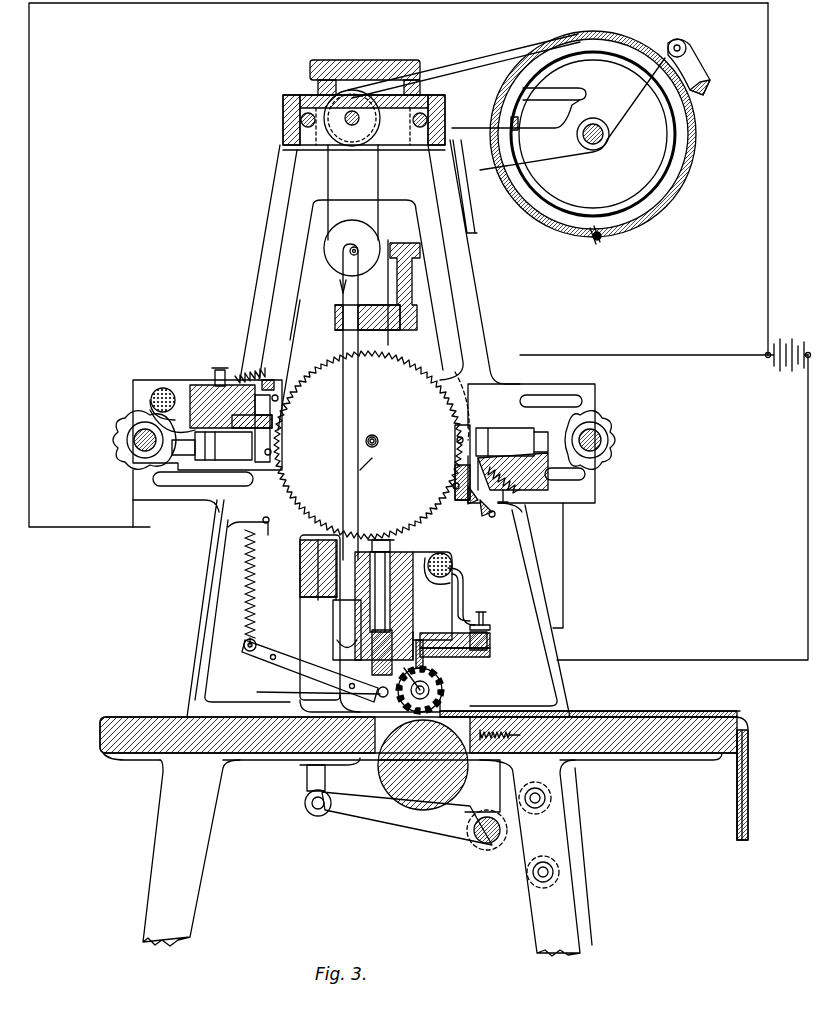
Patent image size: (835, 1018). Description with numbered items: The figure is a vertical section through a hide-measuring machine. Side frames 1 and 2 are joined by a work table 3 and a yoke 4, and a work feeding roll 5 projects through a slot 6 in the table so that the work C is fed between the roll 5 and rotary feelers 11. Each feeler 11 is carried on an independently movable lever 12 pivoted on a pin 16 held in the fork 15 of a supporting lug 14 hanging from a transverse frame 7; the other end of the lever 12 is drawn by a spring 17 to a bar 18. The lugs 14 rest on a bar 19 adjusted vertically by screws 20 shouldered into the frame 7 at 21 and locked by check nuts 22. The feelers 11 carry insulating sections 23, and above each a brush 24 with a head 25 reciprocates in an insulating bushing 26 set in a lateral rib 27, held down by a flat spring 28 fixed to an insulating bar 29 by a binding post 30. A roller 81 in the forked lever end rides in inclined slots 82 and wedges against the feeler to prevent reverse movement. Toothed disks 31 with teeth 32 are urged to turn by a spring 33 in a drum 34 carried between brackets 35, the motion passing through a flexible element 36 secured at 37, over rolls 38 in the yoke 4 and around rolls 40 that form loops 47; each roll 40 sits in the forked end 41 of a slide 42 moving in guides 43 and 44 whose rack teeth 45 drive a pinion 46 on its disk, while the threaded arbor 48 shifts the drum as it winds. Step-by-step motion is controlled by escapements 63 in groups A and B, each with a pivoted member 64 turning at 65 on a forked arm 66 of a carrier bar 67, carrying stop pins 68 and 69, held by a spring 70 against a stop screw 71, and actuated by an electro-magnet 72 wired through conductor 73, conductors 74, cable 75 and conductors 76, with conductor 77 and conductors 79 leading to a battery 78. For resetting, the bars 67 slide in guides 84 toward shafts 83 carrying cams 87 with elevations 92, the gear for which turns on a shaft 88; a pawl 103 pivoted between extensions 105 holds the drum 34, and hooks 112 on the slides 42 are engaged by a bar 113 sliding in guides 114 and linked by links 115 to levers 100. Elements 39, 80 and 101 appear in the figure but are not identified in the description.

The side frame 1 is at (170, 866).
The side frame 2 is at (351, 428).
The work table 3 is at (658, 744).
The yoke 4 is at (283, 112).
The work feeding roll 5 is at (458, 788).
The opening or slot 6 is at (462, 735).
The transverse frame 7 is at (412, 275).
The work engaging member or feeler 11 is at (444, 691).
The lever 12 is at (244, 652).
The supporting lug 14 is at (387, 605).
The fork 15 is at (370, 708).
The pin 16 is at (372, 652).
The spring 17 is at (248, 604).
The bar 18 is at (246, 530).
The bar 19 is at (370, 660).
The adjusting screw 20 is at (400, 600).
The shoulder portion of frame 21 is at (405, 560).
The check nut 22 is at (394, 509).
The insulating section 23 is at (435, 688).
The brush 24 is at (438, 656).
The head 25 is at (427, 634).
The insulating bushing 26 is at (470, 659).
The lateral rib 27 is at (490, 646).
The flat spring 28 is at (482, 626).
The insulating bar 29 is at (487, 637).
The binding post 30 is at (488, 618).
The rotary disk 31 is at (400, 372).
The tooth 32 is at (448, 380).
The spring 33 is at (642, 196).
The drum 34 is at (690, 117).
The bracket 35 is at (558, 162).
The flexible element 36 is at (472, 53).
The securing point 37 is at (597, 244).
The roll 38 is at (330, 100).
The small pulley 39 is at (345, 122).
The roll 40 is at (326, 252).
The forked end 41 is at (342, 283).
The slide 42 is at (343, 340).
The guide 43 is at (335, 316).
The guide 44 is at (355, 565).
The teeth 45 is at (366, 470).
The pinion 46 is at (376, 436).
The loop 47 is at (353, 192).
The arbor 48 is at (608, 138).
The escapement 63 is at (265, 392).
The pivoted member 64 is at (275, 405).
The pivot pin 65 is at (280, 428).
The forked arm 66 is at (556, 492).
The bar 67 is at (205, 400).
The pin 68 is at (272, 453).
The pin 69 is at (280, 400).
The spring 70 is at (248, 380).
The adjusting stop screw 71 is at (478, 516).
The electro-magnet 72 is at (240, 456).
The conductor 73 is at (565, 600).
The conductor 74 is at (466, 592).
The cable 75 is at (165, 392).
The conductor 76 is at (165, 415).
The conductor 77 is at (692, 355).
The battery 78 is at (784, 366).
The conductor 79 is at (29, 250).
The wire 80 is at (808, 596).
The roller 81 is at (400, 708).
The inclined slot 82 is at (340, 737).
The shaft 83 is at (140, 440).
The guide 84 is at (200, 448).
The cam 87 is at (120, 428).
The shaft 88 is at (378, 443).
The elevation 92 is at (112, 444).
The lever 100 is at (380, 825).
The pivot pin 101 is at (484, 842).
The pawl 103 is at (700, 72).
The extension 105 is at (672, 40).
The hook 112 is at (340, 668).
The bar 113 is at (250, 622).
The guide 114 is at (257, 692).
The link 115 is at (285, 735).
The escapement group A is at (545, 367).
The escapement group B is at (216, 352).
The work C is at (606, 715).